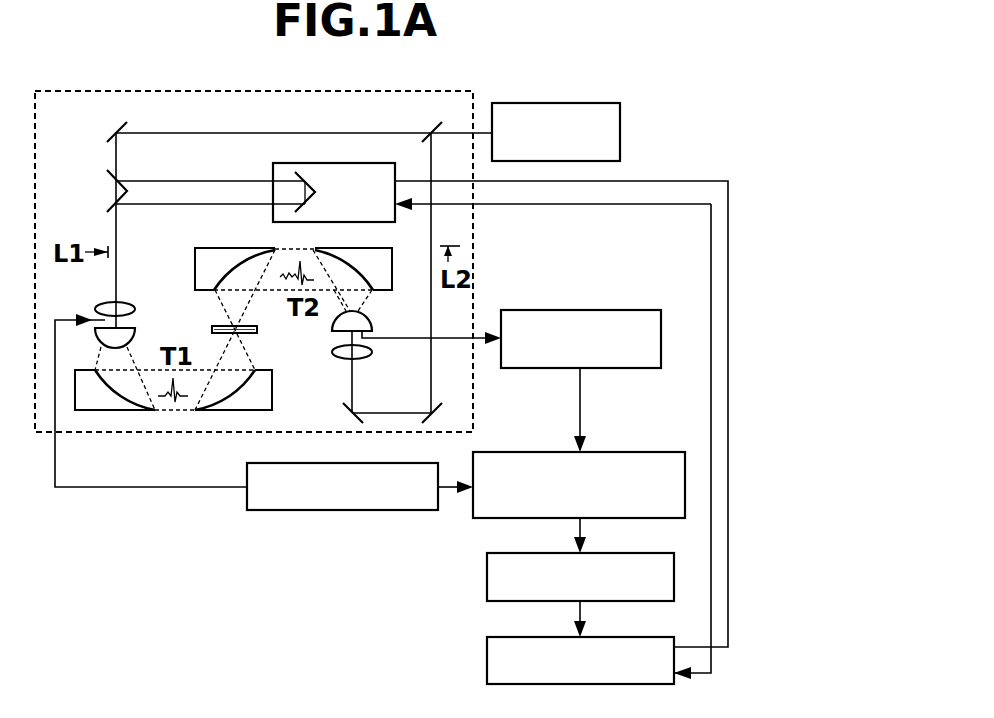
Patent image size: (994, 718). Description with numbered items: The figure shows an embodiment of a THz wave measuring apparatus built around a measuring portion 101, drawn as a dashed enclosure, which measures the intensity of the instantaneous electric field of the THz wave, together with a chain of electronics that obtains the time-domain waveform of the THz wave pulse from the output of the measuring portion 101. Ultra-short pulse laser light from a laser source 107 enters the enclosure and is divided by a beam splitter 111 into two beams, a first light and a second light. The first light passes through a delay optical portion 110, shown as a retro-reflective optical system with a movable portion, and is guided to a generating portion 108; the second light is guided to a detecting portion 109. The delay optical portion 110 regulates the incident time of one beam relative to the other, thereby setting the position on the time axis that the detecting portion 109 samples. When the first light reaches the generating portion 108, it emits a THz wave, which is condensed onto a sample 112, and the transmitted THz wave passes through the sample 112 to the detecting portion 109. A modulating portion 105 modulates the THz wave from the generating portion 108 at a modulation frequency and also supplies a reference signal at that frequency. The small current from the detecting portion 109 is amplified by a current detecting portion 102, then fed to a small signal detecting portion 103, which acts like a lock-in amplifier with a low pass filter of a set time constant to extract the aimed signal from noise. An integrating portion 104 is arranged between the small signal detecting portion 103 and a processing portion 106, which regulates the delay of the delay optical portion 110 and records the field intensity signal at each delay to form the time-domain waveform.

The measuring portion 101 is at (93, 91).
The current detecting portion 102 is at (555, 310).
The small signal detecting portion 103 is at (599, 452).
The integrating portion 104 is at (599, 553).
The modulating portion 105 is at (345, 510).
The processing portion 106 is at (599, 637).
The laser source 107 is at (622, 132).
The generating portion 108 is at (130, 328).
The detecting portion 109 is at (402, 319).
The delay optical portion 110 is at (299, 163).
The beam splitter 111 is at (436, 127).
The sample 112 is at (257, 331).